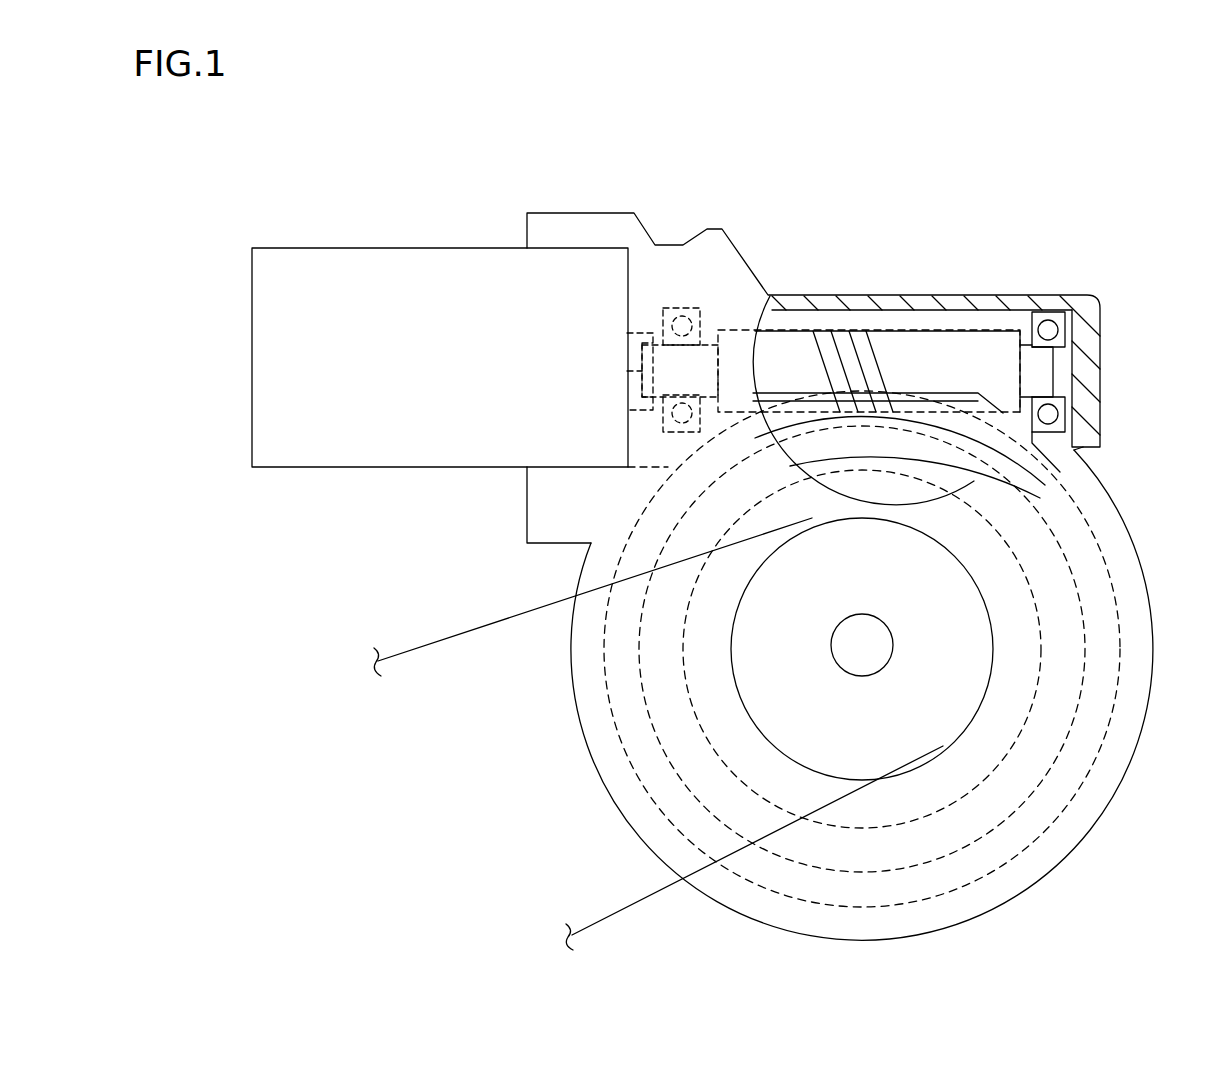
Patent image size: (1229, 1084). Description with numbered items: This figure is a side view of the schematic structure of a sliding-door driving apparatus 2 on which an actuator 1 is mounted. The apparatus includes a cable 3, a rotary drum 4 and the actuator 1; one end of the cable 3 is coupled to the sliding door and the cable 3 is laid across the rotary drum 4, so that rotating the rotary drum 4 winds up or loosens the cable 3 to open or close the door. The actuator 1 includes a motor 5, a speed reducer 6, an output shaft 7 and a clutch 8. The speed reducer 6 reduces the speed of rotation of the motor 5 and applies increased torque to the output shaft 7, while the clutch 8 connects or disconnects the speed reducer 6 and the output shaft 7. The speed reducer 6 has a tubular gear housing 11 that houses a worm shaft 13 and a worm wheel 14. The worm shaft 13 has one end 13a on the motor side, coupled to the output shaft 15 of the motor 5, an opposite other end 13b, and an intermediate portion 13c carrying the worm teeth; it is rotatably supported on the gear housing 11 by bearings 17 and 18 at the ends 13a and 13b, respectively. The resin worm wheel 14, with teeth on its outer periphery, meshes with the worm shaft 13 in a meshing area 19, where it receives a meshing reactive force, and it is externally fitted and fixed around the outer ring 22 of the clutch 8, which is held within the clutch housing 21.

The actuator 1 is at (1113, 327).
The sliding-door driving apparatus 2 is at (1078, 268).
The cable 3 is at (476, 633).
The rotary drum 4 is at (945, 688).
The motor 5 is at (330, 453).
The speed reducer 6 is at (1045, 226).
The output shaft 7 is at (893, 636).
The clutch 8 is at (1043, 620).
The gear housing 11 is at (815, 303).
The worm shaft 13 is at (875, 328).
The one end 13a is at (627, 372).
The other end 13b is at (1043, 369).
The intermediate portion 13c is at (851, 363).
The worm wheel 14 is at (962, 457).
The output shaft 15 is at (623, 337).
The bearing 17 is at (690, 308).
The bearing 18 is at (1060, 428).
The meshing area 19 is at (876, 397).
The clutch housing 21 is at (1072, 460).
The outer ring 22 is at (1040, 498).